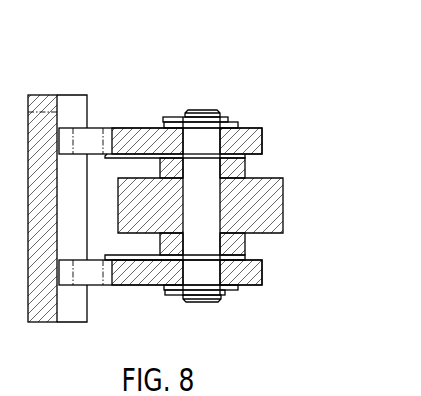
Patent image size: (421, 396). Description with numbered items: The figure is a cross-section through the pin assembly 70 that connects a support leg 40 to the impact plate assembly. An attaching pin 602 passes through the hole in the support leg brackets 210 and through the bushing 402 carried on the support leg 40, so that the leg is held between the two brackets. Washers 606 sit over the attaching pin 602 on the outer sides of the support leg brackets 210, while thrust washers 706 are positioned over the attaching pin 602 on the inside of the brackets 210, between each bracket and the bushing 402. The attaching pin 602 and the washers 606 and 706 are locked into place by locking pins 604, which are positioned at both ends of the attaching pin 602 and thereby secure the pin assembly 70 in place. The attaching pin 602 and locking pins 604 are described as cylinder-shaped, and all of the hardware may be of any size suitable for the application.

The pin assembly 70 is at (180, 52).
The support leg bracket 210 is at (128, 135).
The bushing 402 is at (184, 168).
The attaching pin 602 is at (207, 111).
The locking pin 604 is at (225, 117).
The washer 606 is at (238, 124).
The thrust washer 706 is at (246, 156).
The support leg 40 is at (280, 203).